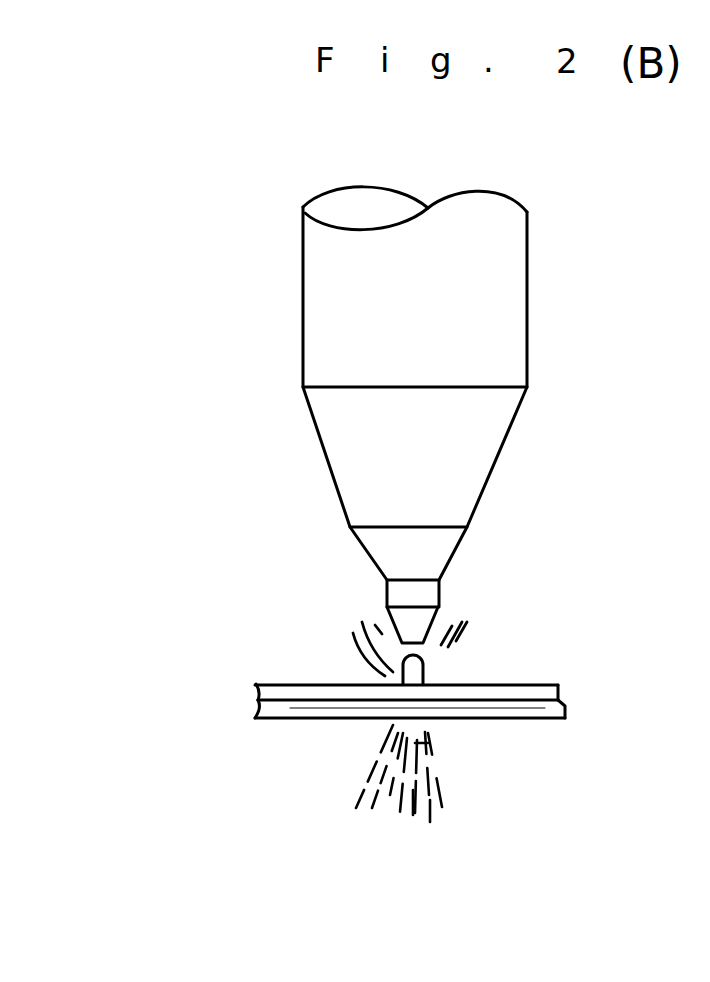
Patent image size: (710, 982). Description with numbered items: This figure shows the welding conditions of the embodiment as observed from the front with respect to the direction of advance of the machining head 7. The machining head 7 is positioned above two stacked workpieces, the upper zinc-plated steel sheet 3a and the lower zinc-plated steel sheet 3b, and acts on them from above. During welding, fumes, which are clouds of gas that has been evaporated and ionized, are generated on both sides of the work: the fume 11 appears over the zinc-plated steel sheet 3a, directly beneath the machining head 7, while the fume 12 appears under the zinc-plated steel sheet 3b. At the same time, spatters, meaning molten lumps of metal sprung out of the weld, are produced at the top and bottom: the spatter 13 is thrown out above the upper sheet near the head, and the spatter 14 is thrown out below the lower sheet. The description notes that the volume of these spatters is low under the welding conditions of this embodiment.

The machining head 7 is at (512, 420).
The spatter 13 is at (467, 602).
The fume 11 is at (425, 667).
The zinc-plated steel sheet 3a is at (535, 683).
The zinc-plated steel sheet 3b is at (540, 718).
The fume 12 is at (413, 753).
The spatter 14 is at (413, 815).